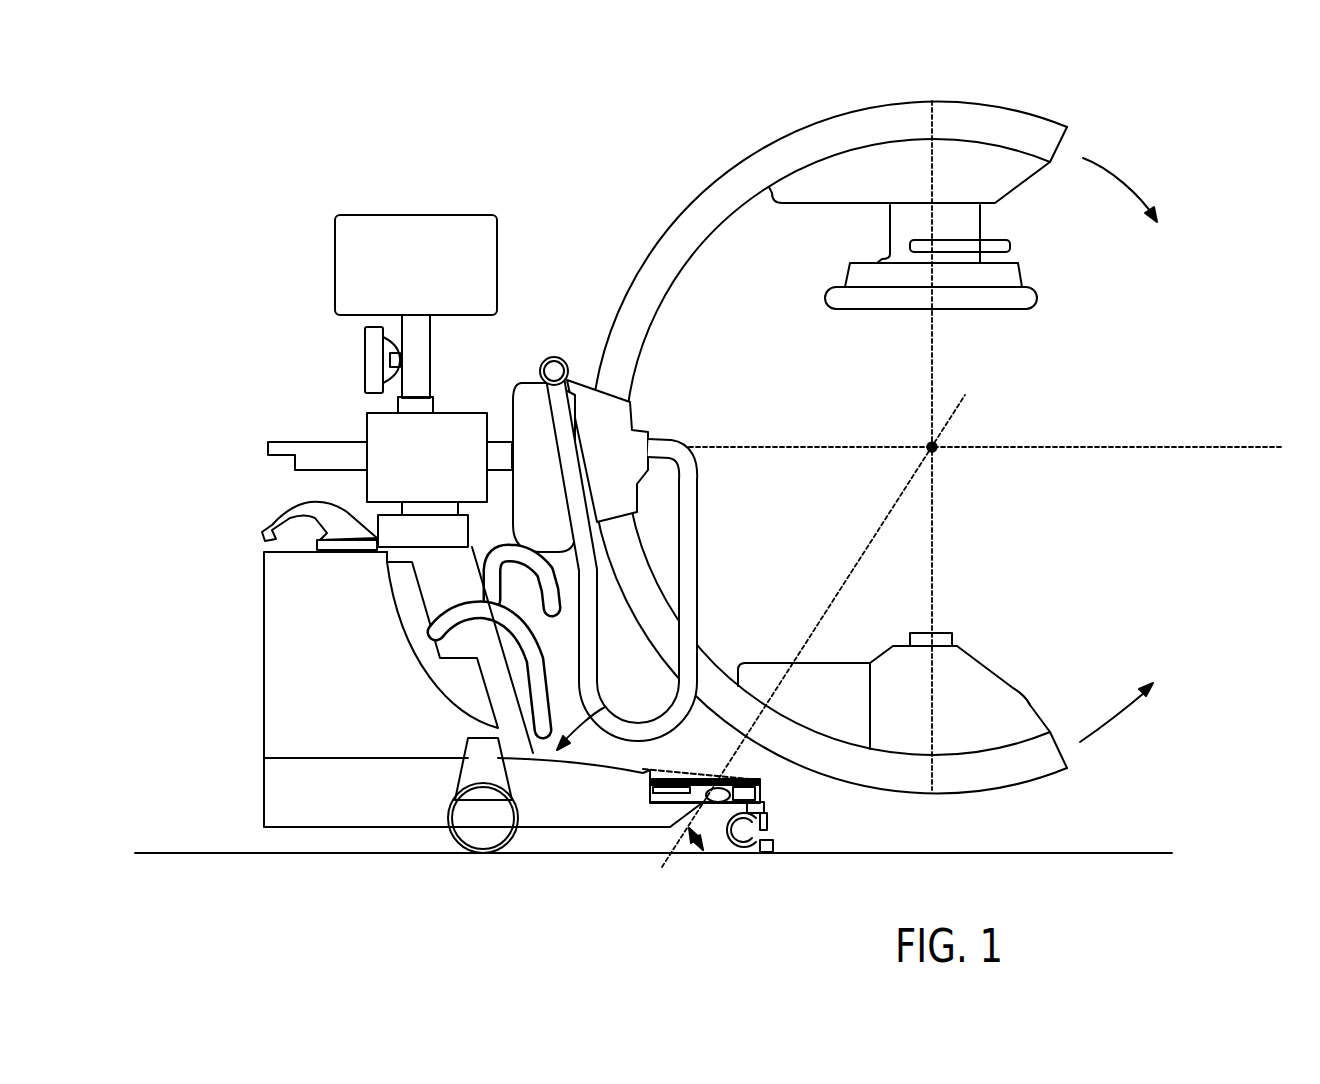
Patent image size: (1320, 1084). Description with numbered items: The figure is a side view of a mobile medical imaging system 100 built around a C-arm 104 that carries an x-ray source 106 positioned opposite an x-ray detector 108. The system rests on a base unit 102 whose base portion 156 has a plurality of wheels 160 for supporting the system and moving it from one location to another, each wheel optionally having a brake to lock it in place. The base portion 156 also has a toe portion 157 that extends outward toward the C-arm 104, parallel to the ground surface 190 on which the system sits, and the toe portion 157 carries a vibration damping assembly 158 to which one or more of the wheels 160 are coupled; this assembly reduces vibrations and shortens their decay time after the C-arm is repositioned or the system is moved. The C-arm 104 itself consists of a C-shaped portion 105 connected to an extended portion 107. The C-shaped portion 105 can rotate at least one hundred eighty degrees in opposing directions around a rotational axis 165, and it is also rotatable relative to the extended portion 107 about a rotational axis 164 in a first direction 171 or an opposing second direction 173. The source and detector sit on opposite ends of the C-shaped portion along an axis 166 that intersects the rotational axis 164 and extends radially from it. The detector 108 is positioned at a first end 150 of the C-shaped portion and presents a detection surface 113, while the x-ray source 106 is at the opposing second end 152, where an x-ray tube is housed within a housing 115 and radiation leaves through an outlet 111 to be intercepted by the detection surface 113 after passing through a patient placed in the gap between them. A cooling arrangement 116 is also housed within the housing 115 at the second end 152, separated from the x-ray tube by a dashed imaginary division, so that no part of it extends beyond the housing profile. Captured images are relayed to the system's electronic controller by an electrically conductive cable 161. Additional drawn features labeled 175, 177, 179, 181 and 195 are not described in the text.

The mobile medical imaging system 100 is at (205, 577).
The base unit 102 is at (252, 701).
The C-arm 104 is at (1012, 67).
The C-shaped portion 105 is at (955, 118).
The x-ray source 106 is at (1015, 627).
The extended portion 107 is at (575, 382).
The x-ray detector 108 is at (1050, 318).
The outlet 111 is at (947, 632).
The detection surface 113 is at (968, 308).
The housing 115 is at (1013, 687).
The cooling arrangement 116 is at (838, 709).
The first end 150 is at (1068, 133).
The second end 152 is at (1065, 757).
The base portion 156 is at (318, 758).
The toe portion 157 is at (596, 719).
The vibration damping assembly 158 is at (712, 766).
The wheels 160 is at (448, 857).
The electrically conductive cable 161 is at (597, 672).
The rotational axis 164 is at (933, 450).
The rotational axis 165 is at (1222, 446).
The axis 166 is at (928, 620).
The first direction 171 is at (1112, 173).
The second direction 173 is at (1110, 730).
The inclined axis 175 is at (884, 518).
The caster bracket 177 is at (764, 808).
The isocenter 179 is at (931, 445).
The pedal movement 181 is at (703, 850).
The ground surface 190 is at (1148, 852).
The sled / foot platform 195 is at (643, 772).